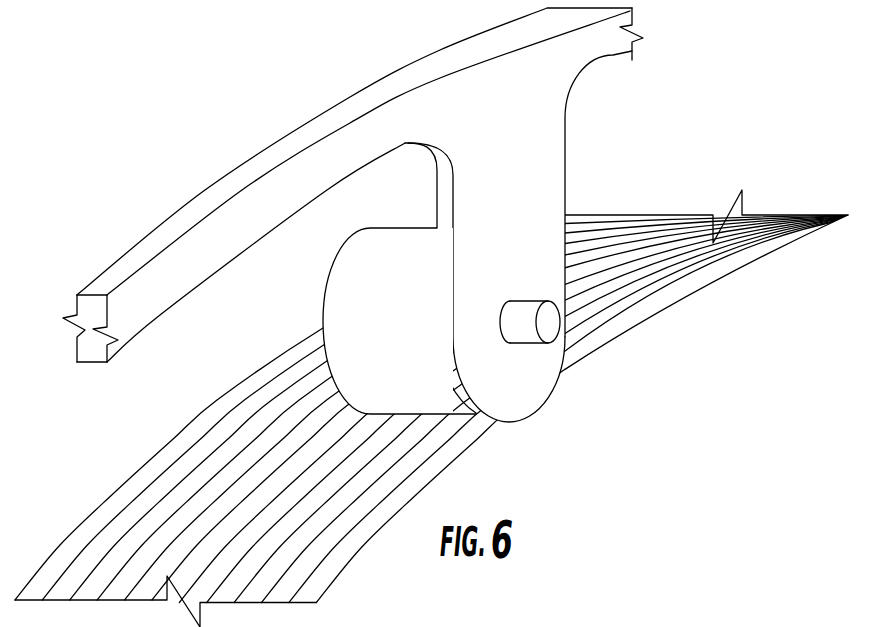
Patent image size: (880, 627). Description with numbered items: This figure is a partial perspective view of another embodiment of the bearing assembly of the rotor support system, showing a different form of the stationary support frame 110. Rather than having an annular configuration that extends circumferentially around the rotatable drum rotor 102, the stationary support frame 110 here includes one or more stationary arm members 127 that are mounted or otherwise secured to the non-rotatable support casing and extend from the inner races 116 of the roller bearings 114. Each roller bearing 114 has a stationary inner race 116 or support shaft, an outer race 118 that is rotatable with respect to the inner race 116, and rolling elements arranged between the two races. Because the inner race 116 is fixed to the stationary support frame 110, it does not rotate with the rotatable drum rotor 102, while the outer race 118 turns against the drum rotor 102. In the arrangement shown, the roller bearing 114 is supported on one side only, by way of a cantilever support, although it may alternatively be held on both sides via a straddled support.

The rotatable drum rotor 102 is at (655, 297).
The stationary support frame 110 is at (187, 242).
The roller bearing 114 is at (342, 262).
The inner race 116 is at (550, 322).
The outer race 118 is at (433, 400).
The stationary arm member 127 is at (543, 247).